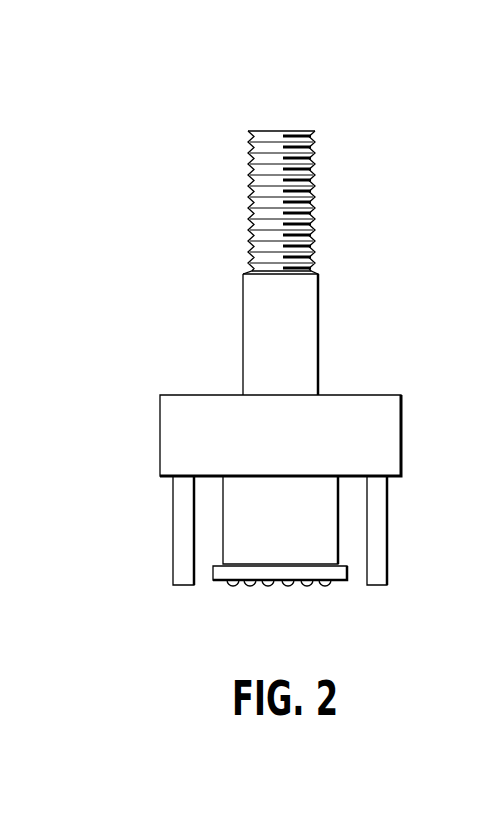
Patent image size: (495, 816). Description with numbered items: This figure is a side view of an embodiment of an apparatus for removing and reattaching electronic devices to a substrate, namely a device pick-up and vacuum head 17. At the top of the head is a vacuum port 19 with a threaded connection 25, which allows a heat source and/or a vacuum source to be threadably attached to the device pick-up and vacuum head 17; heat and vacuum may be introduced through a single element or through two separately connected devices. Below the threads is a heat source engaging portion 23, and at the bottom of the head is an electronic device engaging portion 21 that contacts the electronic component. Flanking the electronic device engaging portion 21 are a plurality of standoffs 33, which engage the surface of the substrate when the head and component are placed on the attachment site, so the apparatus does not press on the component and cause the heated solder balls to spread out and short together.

The device pick-up and vacuum head 17 is at (232, 208).
The vacuum port 19 is at (283, 131).
The threaded connection 25 is at (312, 168).
The heat source engaging portion 23 is at (313, 241).
The standoffs 33 is at (184, 500).
The electronic device engaging portion 21 is at (347, 563).